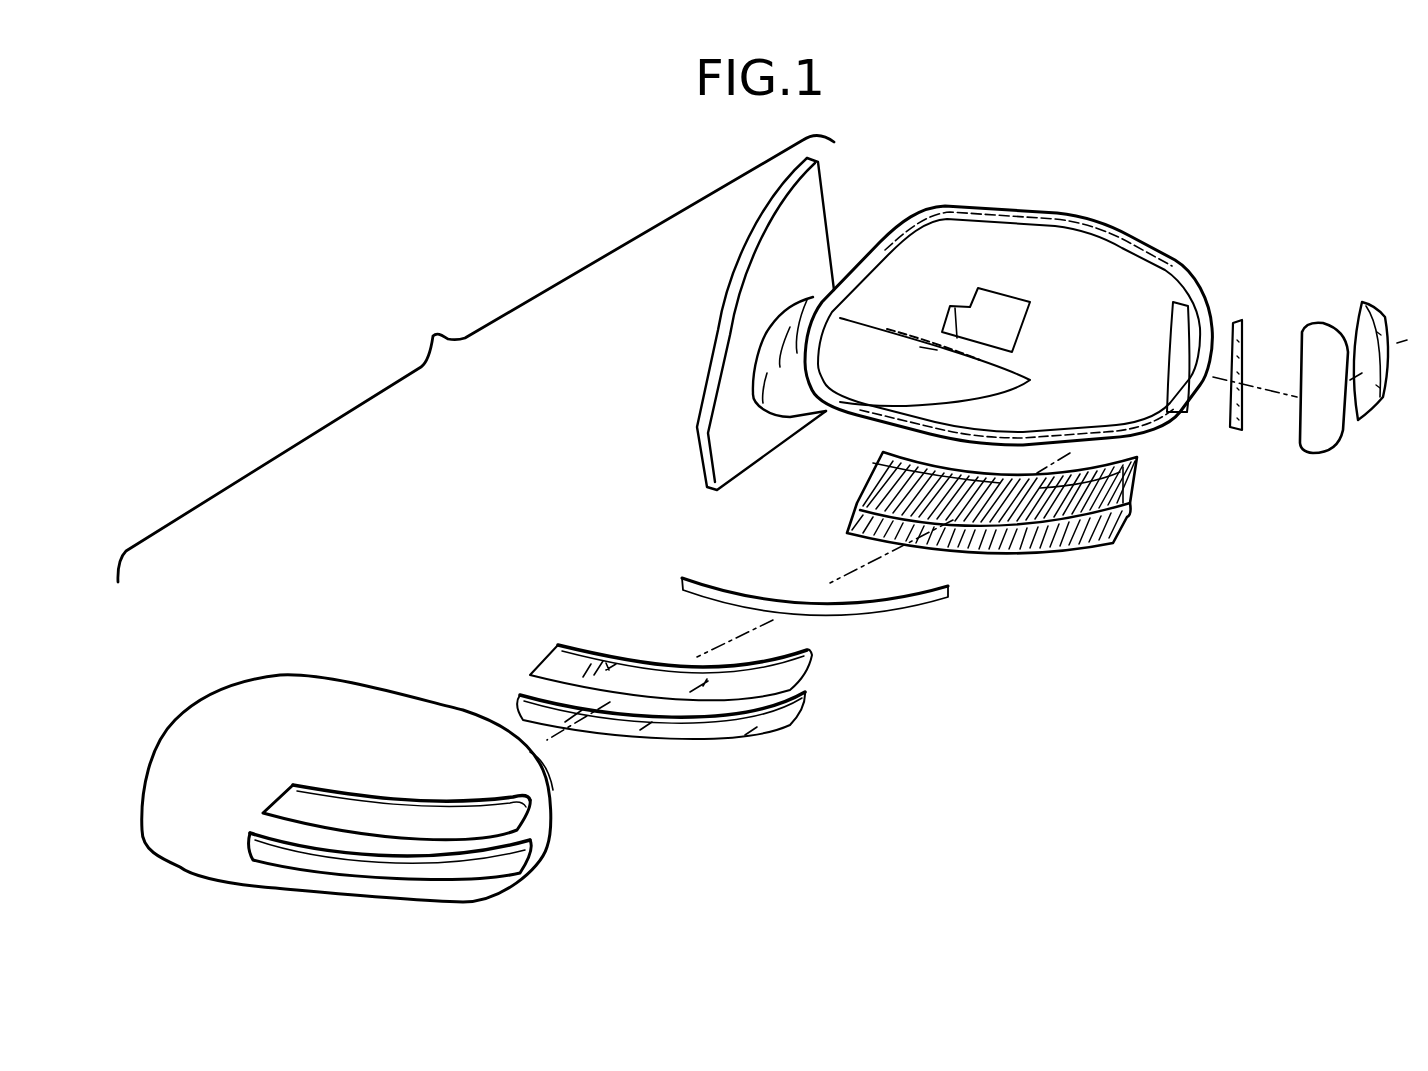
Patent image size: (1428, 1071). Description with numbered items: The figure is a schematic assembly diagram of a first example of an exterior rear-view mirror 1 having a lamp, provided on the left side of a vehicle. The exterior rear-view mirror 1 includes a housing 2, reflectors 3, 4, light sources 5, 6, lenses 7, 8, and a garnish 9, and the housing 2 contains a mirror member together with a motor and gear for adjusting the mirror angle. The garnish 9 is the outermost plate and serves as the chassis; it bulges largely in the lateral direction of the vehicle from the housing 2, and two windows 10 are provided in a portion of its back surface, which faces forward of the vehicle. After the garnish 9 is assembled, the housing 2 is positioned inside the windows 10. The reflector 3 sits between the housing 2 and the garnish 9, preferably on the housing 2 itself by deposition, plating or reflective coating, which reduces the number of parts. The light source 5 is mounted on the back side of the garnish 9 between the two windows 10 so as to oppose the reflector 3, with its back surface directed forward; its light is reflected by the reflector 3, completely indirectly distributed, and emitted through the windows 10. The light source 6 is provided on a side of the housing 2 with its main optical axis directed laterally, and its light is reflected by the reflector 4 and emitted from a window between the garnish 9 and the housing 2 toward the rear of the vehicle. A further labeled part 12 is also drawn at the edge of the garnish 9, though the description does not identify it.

The exterior rear-view mirror 1 is at (446, 331).
The housing 2 is at (998, 212).
The reflector 3 is at (1107, 543).
The reflector 4 is at (1317, 338).
The light source 5 is at (890, 613).
The light source 6 is at (1233, 432).
The lens 7 is at (667, 748).
The lens 8 is at (1375, 298).
The garnish 9 is at (369, 700).
The windows 10 is at (533, 808).
The rib 12 is at (537, 768).